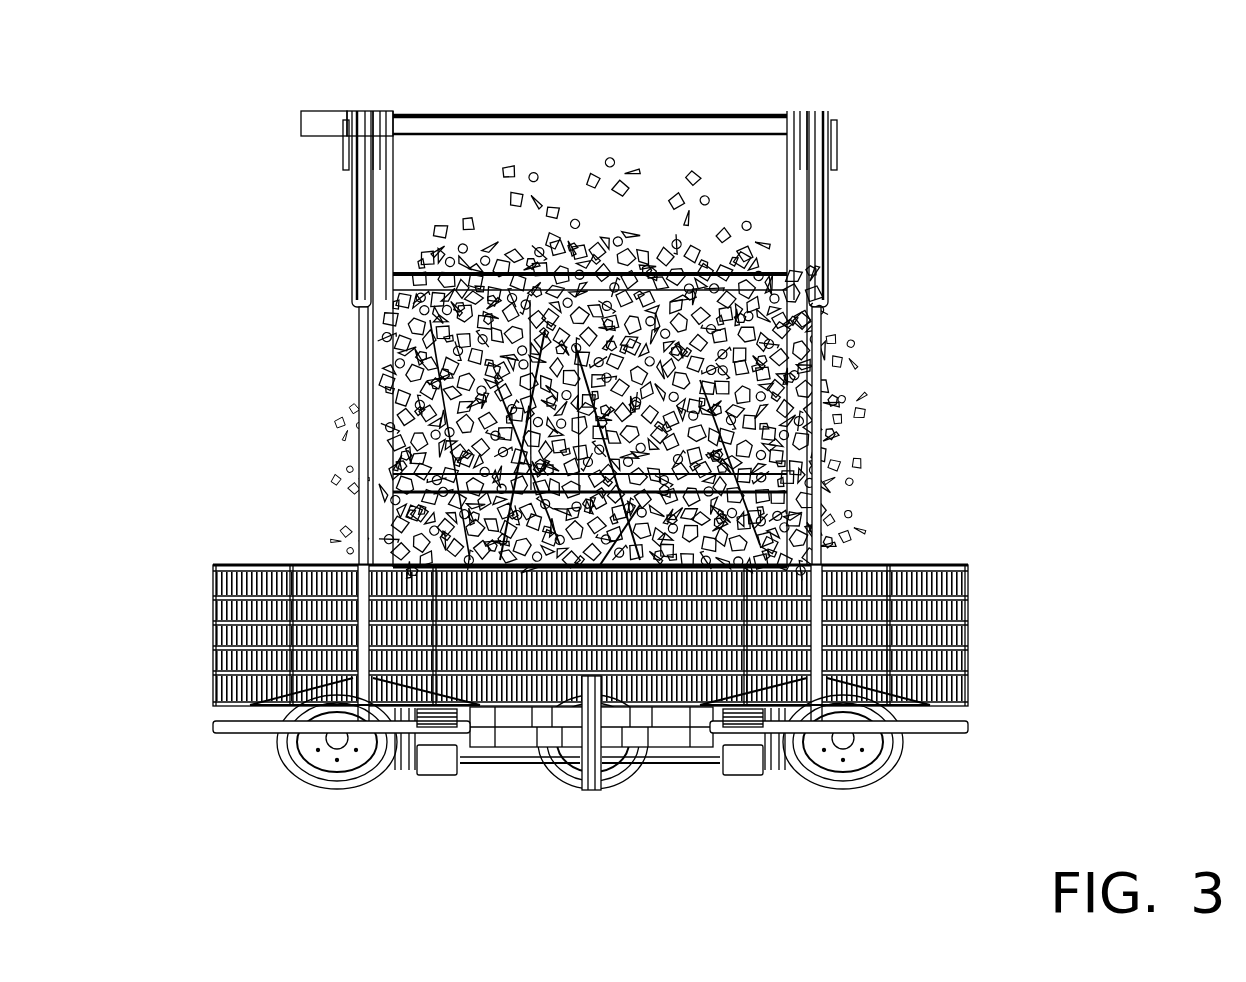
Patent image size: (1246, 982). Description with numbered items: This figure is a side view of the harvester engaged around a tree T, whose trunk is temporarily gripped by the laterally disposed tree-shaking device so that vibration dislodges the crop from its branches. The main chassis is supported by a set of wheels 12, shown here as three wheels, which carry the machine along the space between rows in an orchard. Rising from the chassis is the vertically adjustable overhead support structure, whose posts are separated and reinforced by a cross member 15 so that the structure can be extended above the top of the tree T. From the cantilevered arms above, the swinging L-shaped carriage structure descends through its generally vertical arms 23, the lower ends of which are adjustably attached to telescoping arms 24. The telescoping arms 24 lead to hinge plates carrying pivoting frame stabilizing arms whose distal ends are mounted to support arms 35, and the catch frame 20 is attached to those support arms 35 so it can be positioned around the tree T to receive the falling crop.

The cross member 15 is at (634, 115).
The generally vertical arms 23 is at (360, 283).
The telescoping arms 24 is at (357, 339).
The catch frame 20 is at (240, 580).
The support arms 35 is at (818, 583).
The wheels 12 is at (282, 762).
The tree T is at (597, 792).